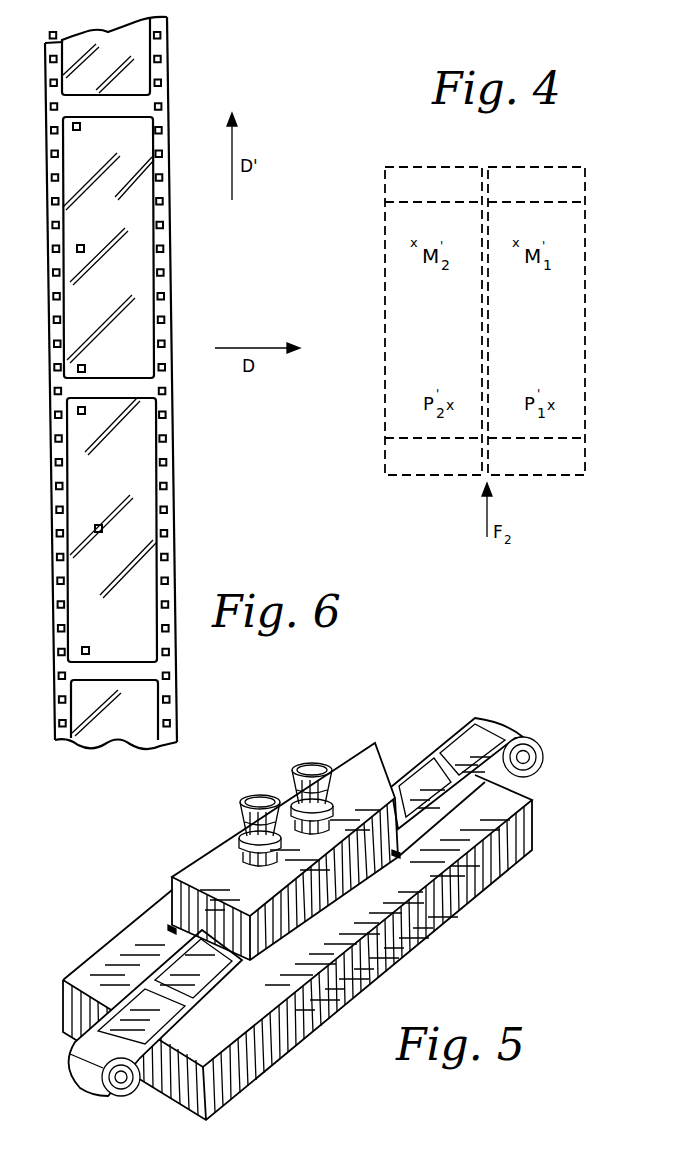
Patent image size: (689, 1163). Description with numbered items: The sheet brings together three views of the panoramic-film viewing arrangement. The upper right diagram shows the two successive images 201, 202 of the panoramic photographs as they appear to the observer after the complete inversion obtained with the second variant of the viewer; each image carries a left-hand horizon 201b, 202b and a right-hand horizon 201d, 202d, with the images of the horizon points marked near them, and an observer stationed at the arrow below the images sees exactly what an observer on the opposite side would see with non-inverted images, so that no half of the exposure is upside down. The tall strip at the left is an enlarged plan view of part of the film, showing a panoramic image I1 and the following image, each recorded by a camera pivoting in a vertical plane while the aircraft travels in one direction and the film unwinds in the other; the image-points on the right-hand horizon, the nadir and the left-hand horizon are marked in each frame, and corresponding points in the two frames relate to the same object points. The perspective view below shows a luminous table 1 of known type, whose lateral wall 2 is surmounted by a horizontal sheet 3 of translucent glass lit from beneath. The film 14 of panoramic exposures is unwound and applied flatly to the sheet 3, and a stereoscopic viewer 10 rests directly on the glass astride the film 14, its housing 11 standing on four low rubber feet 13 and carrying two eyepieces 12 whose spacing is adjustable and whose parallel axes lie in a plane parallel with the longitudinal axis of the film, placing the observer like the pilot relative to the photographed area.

In FIG. 5, the luminous table 1 is at (540, 817).
In FIG. 5, the lateral wall 2 is at (505, 857).
In FIG. 5, the horizontal sheet of translucent glass 3 is at (513, 802).
In FIG. 5, the stereoscopic viewer 10 is at (186, 870).
In FIG. 5, the housing 11 is at (352, 865).
In FIG. 5, the eyepieces 12 is at (252, 800).
In FIG. 5, the low rubber feet 13 is at (402, 853).
In FIG. 6, the film of panoramic exposures 14 is at (46, 222).
In FIG. 5, the film of panoramic exposures 14 is at (420, 788).
In FIG. 6, the panoramic image I1 is at (137, 265).
In FIG. 4, the image of first photograph 201 is at (527, 166).
In FIG. 4, the image of second photograph 202 is at (443, 166).
In FIG. 4, the left-hand horizon of image 201 201b is at (548, 437).
In FIG. 4, the right-hand horizon of image 201 201d is at (542, 204).
In FIG. 4, the left-hand horizon of image 202 202b is at (430, 437).
In FIG. 4, the right-hand horizon of image 202 202d is at (402, 207).